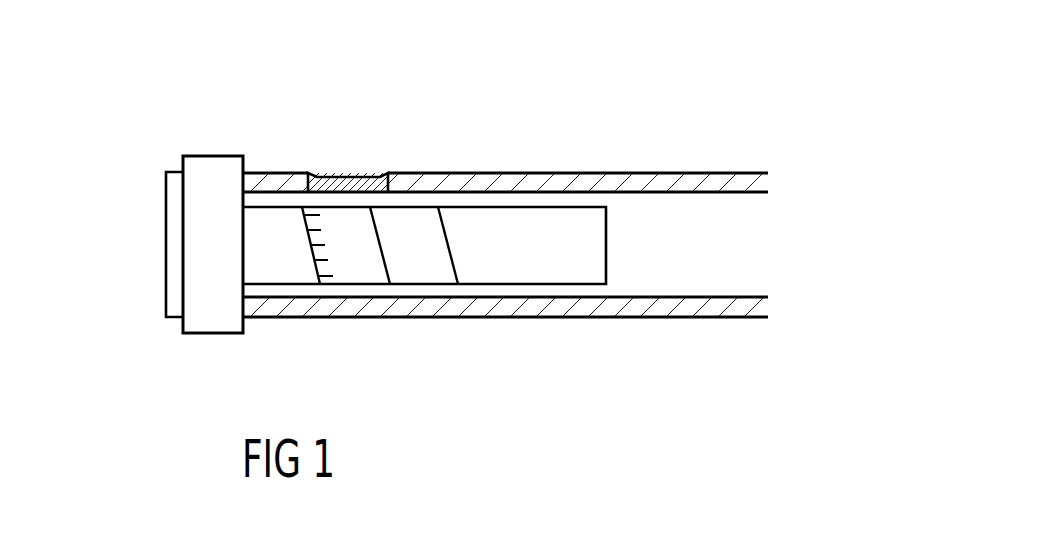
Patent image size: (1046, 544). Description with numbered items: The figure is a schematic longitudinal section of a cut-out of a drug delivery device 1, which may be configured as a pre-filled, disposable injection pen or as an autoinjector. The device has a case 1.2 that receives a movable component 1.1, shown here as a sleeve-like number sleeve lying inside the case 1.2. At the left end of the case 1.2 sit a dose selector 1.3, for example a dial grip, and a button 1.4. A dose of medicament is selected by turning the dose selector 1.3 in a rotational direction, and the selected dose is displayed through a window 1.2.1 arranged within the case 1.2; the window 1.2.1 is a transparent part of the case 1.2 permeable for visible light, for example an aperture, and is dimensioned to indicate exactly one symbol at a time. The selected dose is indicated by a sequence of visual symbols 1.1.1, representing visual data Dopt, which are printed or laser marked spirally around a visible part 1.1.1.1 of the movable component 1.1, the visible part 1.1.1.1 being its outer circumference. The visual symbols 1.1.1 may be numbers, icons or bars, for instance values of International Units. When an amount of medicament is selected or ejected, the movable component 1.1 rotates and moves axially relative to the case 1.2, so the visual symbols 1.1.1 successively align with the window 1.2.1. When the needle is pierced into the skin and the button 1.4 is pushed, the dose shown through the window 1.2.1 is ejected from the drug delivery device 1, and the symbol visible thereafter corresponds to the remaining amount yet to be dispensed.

The drug delivery device 1 is at (226, 104).
The movable component 1.1 is at (518, 218).
The visual symbols 1.1.1 is at (338, 284).
The visible part 1.1.1.1 is at (377, 270).
The case 1.2 is at (657, 183).
The window 1.2.1 is at (353, 173).
The dose selector 1.3 is at (197, 282).
The button 1.4 is at (165, 237).
The optimal distance Dopt is at (310, 261).